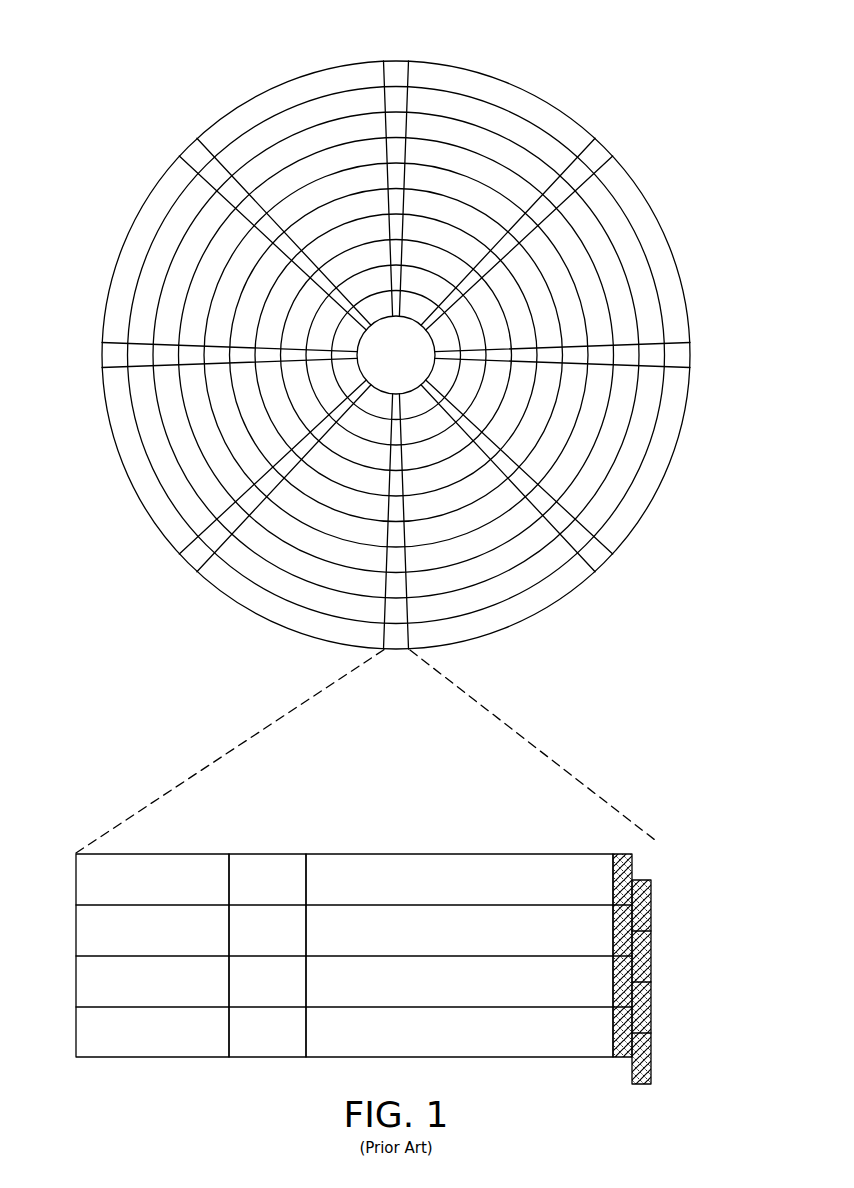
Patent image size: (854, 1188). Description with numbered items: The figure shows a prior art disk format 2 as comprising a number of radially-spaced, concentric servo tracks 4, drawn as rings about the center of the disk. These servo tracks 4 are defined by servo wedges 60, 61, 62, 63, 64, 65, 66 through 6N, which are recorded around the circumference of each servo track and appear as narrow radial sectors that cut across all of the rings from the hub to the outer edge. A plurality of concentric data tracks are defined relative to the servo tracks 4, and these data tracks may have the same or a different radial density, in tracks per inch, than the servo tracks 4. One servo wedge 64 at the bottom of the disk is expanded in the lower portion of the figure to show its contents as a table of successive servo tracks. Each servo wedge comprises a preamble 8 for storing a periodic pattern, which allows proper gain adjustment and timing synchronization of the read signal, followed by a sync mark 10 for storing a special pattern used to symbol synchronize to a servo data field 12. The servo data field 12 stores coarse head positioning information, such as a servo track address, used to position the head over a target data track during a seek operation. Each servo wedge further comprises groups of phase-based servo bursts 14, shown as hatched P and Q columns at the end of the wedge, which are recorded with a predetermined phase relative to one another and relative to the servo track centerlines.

The disk format 2 is at (178, 66).
The servo tracks 4 is at (497, 120).
The servo wedge 60 is at (398, 60).
The servo wedge 61 is at (606, 149).
The servo wedge 62 is at (684, 356).
The servo wedge 63 is at (600, 563).
The servo wedge 64 is at (258, 710).
The servo wedge 65 is at (190, 563).
The servo wedge 66 is at (107, 353).
The servo wedge 6N is at (128, 146).
The preamble 8 is at (160, 853).
The sync mark 10 is at (268, 853).
The servo data field 12 is at (447, 853).
The servo bursts 14 is at (652, 849).